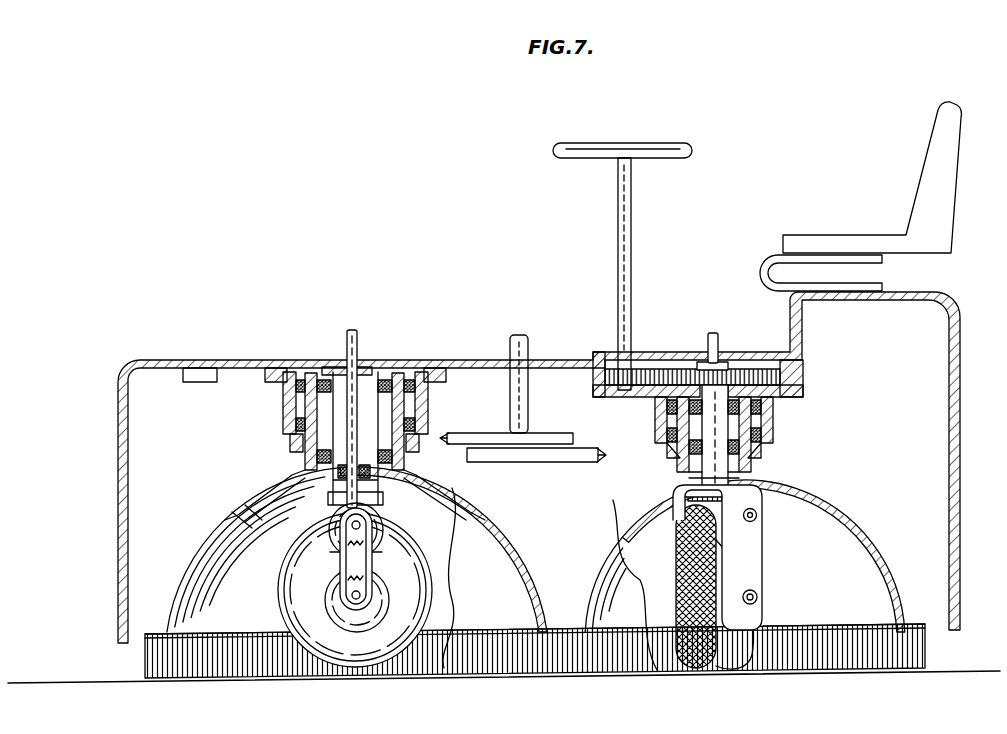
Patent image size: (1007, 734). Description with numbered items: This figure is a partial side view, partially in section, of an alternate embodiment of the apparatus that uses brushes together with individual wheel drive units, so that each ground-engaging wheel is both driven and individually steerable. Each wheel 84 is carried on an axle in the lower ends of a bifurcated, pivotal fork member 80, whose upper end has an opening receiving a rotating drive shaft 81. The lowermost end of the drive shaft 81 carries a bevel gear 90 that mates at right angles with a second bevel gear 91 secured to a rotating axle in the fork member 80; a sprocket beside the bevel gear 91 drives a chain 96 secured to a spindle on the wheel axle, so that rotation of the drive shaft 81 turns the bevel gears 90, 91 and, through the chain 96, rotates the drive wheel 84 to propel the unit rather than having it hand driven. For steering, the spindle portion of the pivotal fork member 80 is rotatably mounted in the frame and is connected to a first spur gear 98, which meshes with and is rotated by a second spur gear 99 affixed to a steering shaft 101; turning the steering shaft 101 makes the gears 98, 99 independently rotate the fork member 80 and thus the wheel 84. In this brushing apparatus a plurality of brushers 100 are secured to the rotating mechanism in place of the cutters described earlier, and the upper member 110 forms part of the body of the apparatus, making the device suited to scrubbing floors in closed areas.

The upper member 110 is at (238, 362).
The rotating drive shaft 81 is at (358, 347).
The steering shaft 101 is at (632, 263).
The second spur gear 99 is at (595, 378).
The first spur gear 98 is at (795, 376).
The bevel gear 90 is at (330, 492).
The bevel gear 91 is at (332, 532).
The chain 96 is at (378, 540).
The wheel 84 is at (318, 638).
The bifurcated fork member 80 is at (748, 558).
The brushers 100 is at (862, 644).